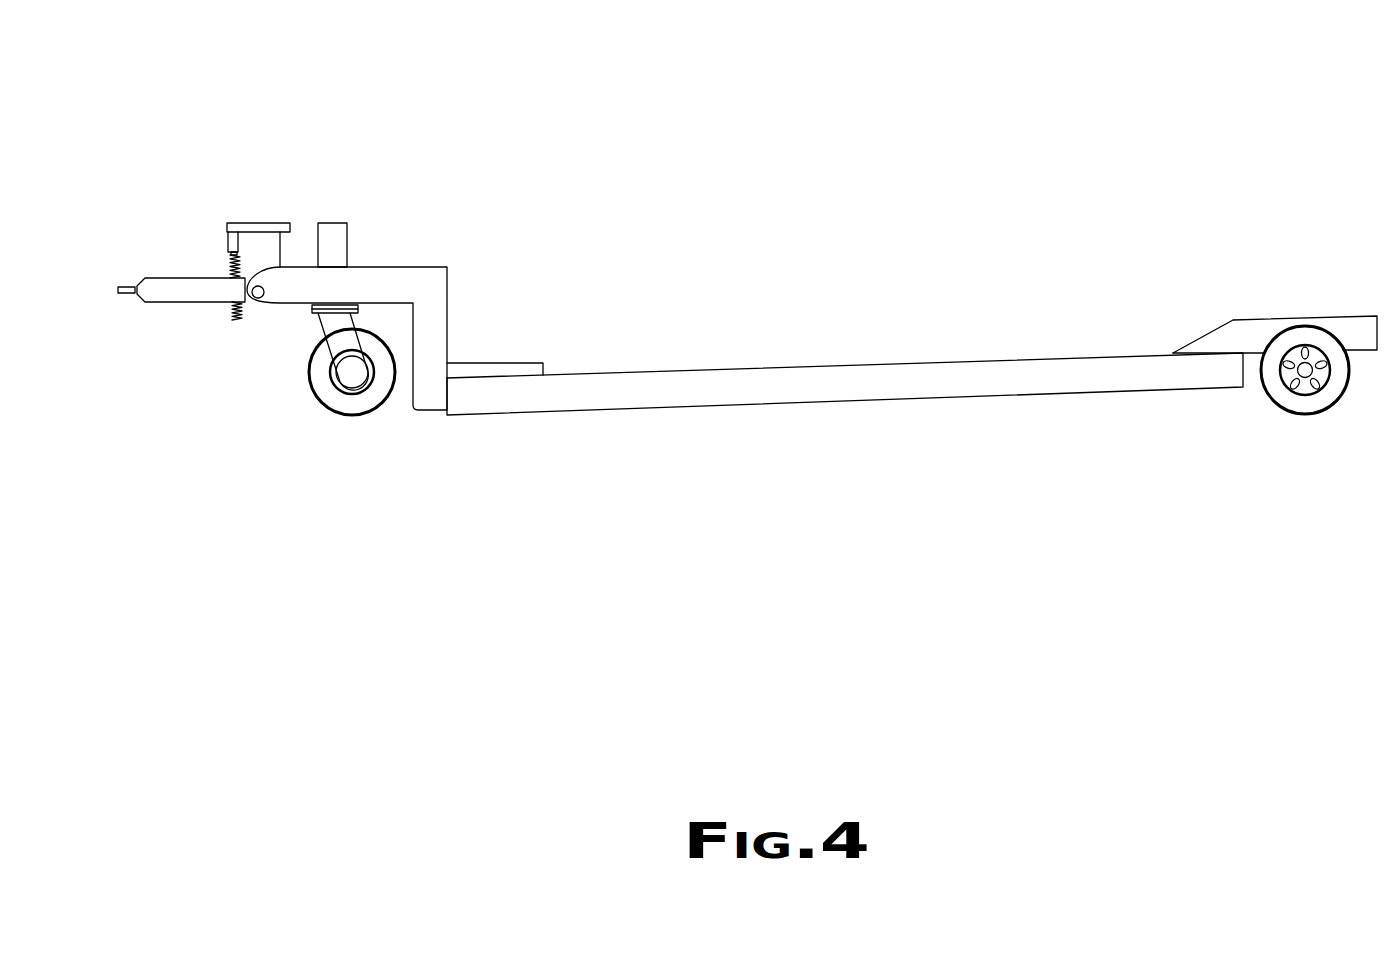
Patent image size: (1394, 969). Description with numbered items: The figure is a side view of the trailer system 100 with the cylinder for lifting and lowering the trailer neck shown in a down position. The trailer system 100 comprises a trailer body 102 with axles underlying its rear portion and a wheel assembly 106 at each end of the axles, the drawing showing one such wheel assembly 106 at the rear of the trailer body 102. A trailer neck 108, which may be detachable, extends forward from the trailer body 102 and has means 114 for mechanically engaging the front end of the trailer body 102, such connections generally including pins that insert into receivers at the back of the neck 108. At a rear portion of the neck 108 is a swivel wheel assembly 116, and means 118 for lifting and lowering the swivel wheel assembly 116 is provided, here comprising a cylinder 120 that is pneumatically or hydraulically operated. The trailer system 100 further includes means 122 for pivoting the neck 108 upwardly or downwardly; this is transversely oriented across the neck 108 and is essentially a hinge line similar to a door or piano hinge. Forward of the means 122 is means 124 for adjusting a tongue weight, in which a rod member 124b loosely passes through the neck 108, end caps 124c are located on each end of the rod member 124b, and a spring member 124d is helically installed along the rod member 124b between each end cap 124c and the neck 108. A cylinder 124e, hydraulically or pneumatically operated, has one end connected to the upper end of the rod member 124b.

The trailer system 100 is at (535, 198).
The trailer body 102 is at (765, 368).
The wheel assembly 106 is at (1280, 437).
The trailer neck 108 is at (438, 284).
The means for mechanically engaging a front end of the trailer body 114 is at (515, 345).
The swivel wheel assembly 116 is at (372, 397).
The means for lifting and lowering the swivel wheel assembly 118 is at (380, 236).
The cylinder 120 is at (337, 233).
The means for pivoting the neck 122 is at (255, 298).
The means for adjusting a tongue weight 124 is at (268, 198).
The rod member 124b is at (232, 316).
The end caps 124c is at (227, 262).
The spring member 124d is at (126, 290).
The cylinder 124e is at (228, 240).